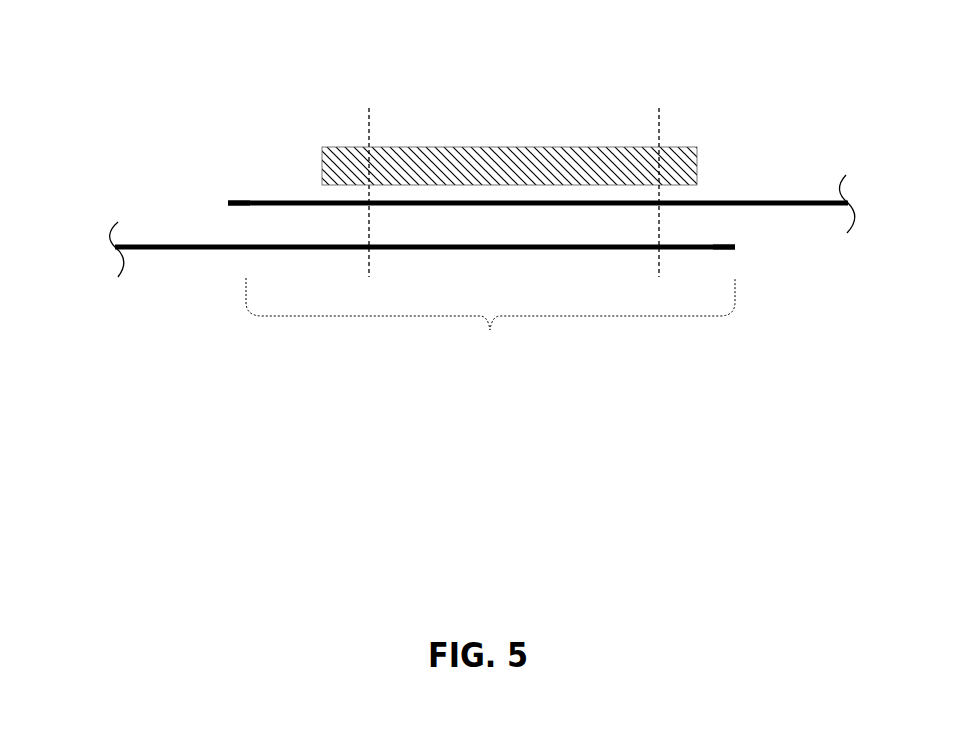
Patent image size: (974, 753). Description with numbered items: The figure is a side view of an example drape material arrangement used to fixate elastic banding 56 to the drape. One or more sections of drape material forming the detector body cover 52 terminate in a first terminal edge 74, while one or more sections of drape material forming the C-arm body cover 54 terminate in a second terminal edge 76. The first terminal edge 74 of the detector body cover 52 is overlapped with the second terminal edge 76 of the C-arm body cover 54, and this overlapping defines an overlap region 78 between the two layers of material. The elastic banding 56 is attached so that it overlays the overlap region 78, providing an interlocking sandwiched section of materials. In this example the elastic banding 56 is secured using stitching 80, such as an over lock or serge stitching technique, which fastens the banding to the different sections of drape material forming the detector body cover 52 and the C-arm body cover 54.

The detector body cover 52 is at (753, 202).
The C-arm body cover 54 is at (190, 250).
The elastic banding 56 is at (490, 147).
The first terminal edge 74 is at (228, 202).
The second terminal edge 76 is at (735, 250).
The overlap region 78 is at (490, 320).
The stitching 80 is at (660, 128).